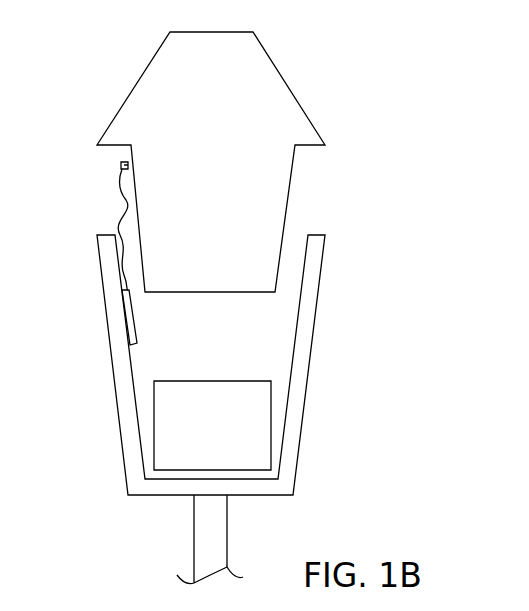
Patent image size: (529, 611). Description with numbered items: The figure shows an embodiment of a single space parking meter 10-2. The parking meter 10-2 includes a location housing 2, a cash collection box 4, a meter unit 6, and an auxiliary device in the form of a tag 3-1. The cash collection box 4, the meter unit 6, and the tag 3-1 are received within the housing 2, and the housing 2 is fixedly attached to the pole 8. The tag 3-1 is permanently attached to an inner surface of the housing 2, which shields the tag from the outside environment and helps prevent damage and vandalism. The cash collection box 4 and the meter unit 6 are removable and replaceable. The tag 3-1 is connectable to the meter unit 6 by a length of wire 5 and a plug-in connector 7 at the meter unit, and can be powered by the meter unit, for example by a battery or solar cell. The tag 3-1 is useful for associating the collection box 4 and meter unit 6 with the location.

The single space parking meter 10-2 is at (400, 98).
The meter unit 6 is at (272, 60).
The location housing 2 is at (318, 300).
The cash collection box 4 is at (272, 430).
The tag 3-1 is at (128, 319).
The plug-in connector 7 is at (121, 165).
The wire 5 is at (118, 221).
The pole 8 is at (227, 535).